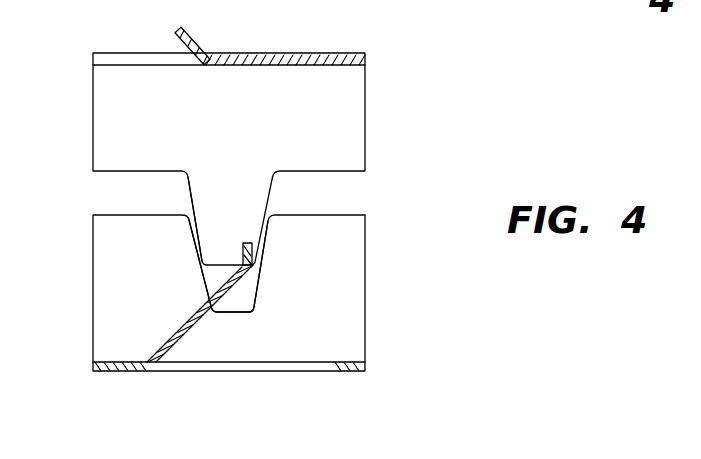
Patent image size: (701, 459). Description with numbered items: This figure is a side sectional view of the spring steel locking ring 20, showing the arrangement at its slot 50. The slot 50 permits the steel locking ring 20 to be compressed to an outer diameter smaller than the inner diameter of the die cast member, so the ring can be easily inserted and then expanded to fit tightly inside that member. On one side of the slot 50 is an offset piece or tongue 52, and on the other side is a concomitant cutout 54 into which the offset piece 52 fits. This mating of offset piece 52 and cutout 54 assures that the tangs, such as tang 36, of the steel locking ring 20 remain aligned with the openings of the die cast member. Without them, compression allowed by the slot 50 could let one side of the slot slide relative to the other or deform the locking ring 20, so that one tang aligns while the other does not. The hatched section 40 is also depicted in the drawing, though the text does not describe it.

The steel locking ring 20 is at (357, 373).
The tang 36 is at (195, 43).
The diagonal strip 40 is at (183, 335).
The slot 50 is at (343, 192).
The offset piece or tongue 52 is at (193, 197).
The cutout 54 is at (243, 295).